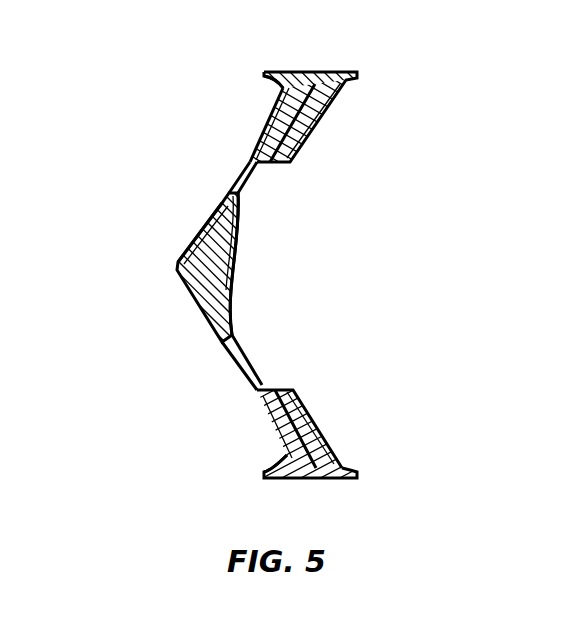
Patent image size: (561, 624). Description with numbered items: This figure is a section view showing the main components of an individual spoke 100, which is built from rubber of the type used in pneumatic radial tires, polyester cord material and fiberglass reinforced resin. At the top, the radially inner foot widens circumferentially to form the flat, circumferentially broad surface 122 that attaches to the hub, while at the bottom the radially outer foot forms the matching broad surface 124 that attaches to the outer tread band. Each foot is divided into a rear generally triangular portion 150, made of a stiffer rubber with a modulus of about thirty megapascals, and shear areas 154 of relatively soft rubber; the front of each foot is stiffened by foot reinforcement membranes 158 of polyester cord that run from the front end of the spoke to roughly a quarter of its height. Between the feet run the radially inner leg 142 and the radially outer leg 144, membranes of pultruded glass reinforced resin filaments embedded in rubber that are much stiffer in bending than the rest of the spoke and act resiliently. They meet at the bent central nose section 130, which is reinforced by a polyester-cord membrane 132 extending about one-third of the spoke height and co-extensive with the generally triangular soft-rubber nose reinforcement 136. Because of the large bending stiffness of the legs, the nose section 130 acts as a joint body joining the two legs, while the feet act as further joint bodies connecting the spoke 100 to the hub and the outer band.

The spoke 100 is at (146, 71).
The radially inner surface 122 is at (323, 72).
The radially outer surface 124 is at (318, 480).
The nose section 130 is at (198, 307).
The membrane 132 is at (200, 231).
The nose reinforcement 136 is at (227, 288).
The radially inner leg 142 is at (243, 171).
The radially outer leg 144 is at (236, 366).
The rear generally triangular portion 150 is at (283, 87).
The shear areas 154 is at (298, 138).
The foot reinforcement membranes 158 is at (326, 109).